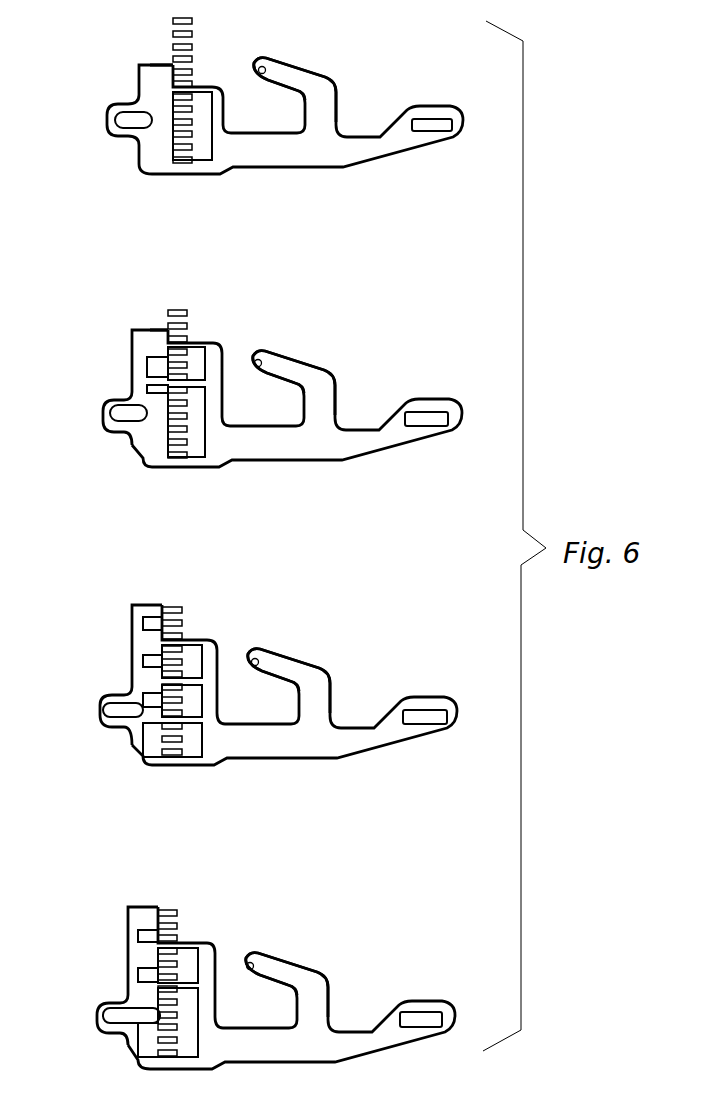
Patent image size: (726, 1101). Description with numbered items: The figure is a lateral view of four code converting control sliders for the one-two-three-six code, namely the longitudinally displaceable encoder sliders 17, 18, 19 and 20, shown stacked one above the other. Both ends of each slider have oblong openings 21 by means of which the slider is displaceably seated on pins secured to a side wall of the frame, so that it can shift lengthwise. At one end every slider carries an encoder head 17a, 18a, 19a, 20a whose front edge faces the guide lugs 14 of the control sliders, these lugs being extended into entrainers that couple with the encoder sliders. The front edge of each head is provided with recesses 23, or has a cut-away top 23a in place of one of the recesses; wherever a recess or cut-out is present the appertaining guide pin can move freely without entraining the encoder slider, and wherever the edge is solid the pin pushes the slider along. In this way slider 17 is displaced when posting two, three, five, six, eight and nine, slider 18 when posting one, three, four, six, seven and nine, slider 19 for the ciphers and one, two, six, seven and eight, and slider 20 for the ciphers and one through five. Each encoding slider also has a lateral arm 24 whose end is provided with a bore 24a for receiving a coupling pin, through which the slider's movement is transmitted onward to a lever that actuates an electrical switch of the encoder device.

The guide lugs 14 is at (178, 147).
The encoder slider 17 is at (332, 1045).
The encoder head 17a is at (142, 908).
The encoder slider 18 is at (287, 743).
The encoder head 18a is at (138, 627).
The encoder slider 19 is at (283, 447).
The encoder head 19a is at (143, 443).
The encoder slider 20 is at (293, 152).
The encoder head 20a is at (147, 90).
The oblong openings 21 is at (122, 120).
The recesses 23 is at (150, 370).
The cut-away top 23a is at (152, 65).
The lateral arm 24 is at (310, 82).
The bore 24a is at (263, 68).